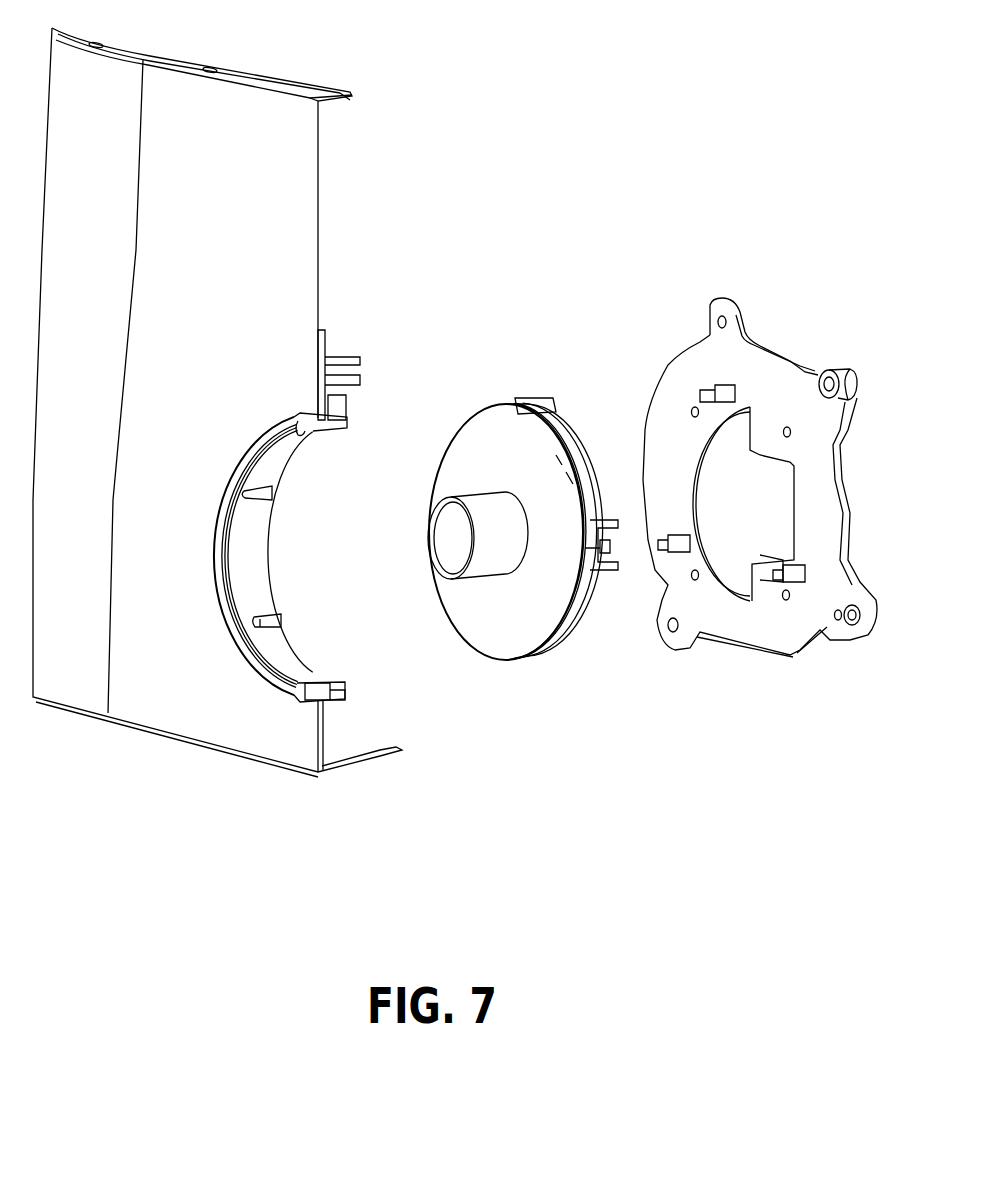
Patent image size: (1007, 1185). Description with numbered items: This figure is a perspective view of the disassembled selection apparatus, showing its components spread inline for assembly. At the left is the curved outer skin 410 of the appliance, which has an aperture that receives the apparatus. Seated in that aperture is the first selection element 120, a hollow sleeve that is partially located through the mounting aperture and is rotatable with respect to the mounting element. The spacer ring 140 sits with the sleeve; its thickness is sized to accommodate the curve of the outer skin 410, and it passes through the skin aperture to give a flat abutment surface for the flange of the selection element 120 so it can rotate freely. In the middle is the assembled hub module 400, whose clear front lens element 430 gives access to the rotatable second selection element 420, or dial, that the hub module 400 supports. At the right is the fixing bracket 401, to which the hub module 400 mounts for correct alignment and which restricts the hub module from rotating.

The curved outer skin 410 is at (245, 165).
The first selection element 120 is at (270, 686).
The spacer ring 140 is at (307, 705).
The hub module 400 is at (499, 290).
The fixing bracket 401 is at (770, 373).
The second selection element 420 is at (458, 490).
The front lens element 430 is at (526, 630).